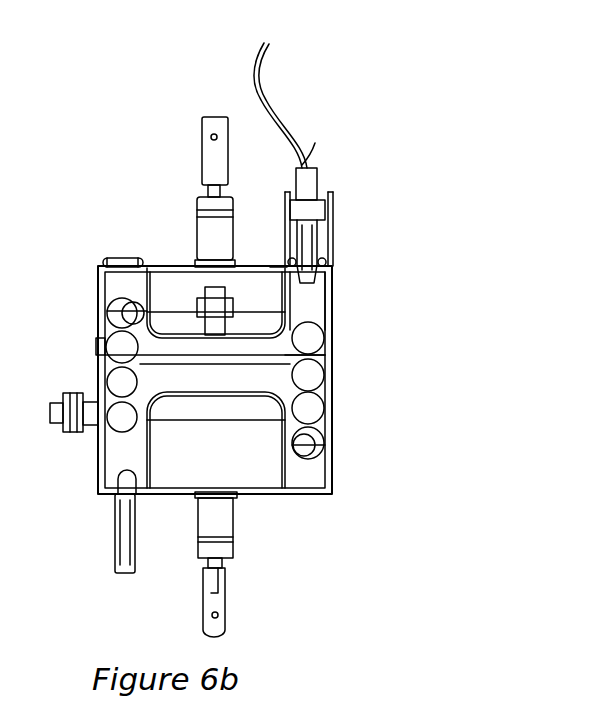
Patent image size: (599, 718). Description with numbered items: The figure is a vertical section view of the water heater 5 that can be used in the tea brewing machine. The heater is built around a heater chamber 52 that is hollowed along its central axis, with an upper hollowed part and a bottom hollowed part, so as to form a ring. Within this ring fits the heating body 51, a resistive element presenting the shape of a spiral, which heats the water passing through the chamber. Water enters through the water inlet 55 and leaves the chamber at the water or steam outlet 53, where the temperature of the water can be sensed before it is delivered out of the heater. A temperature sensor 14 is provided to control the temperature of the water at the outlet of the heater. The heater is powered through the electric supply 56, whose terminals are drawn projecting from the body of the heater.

The water heater 5 is at (453, 335).
The temperature sensor 14 is at (310, 220).
The heating body 51 is at (310, 340).
The heater chamber 52 is at (318, 307).
The water or steam outlet 53 is at (325, 277).
The water inlet 55 is at (127, 565).
The electric supply 56 is at (201, 161).